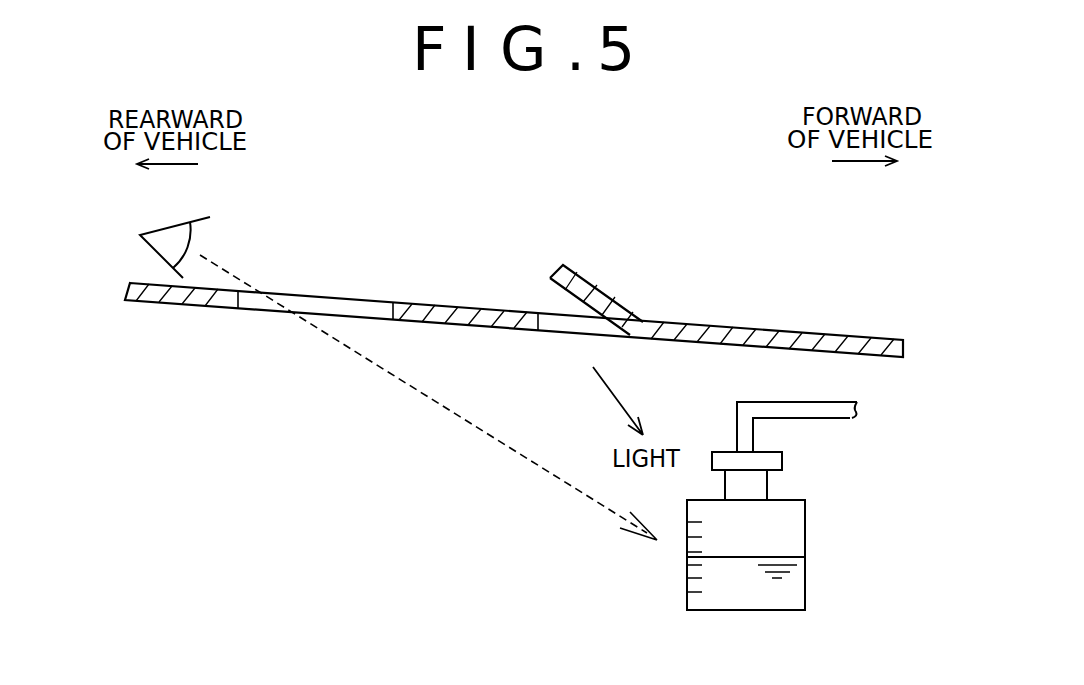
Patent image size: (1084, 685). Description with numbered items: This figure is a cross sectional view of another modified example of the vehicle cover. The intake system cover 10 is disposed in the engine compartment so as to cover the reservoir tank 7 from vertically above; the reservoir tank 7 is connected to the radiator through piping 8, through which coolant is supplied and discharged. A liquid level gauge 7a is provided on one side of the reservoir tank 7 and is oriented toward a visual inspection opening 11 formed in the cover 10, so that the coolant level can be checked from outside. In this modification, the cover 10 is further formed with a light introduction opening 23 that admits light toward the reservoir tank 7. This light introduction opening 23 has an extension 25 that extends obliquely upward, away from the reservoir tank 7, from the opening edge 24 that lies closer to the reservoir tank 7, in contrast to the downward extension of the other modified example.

The reservoir tank 7 is at (805, 532).
The liquid level gauge 7a is at (700, 553).
The piping 8 is at (831, 420).
The intake system cover 10 is at (833, 331).
The visual inspection opening 11 is at (389, 300).
The light introduction opening 23 is at (543, 320).
The opening edge 24 is at (650, 322).
The extension 25 is at (595, 284).